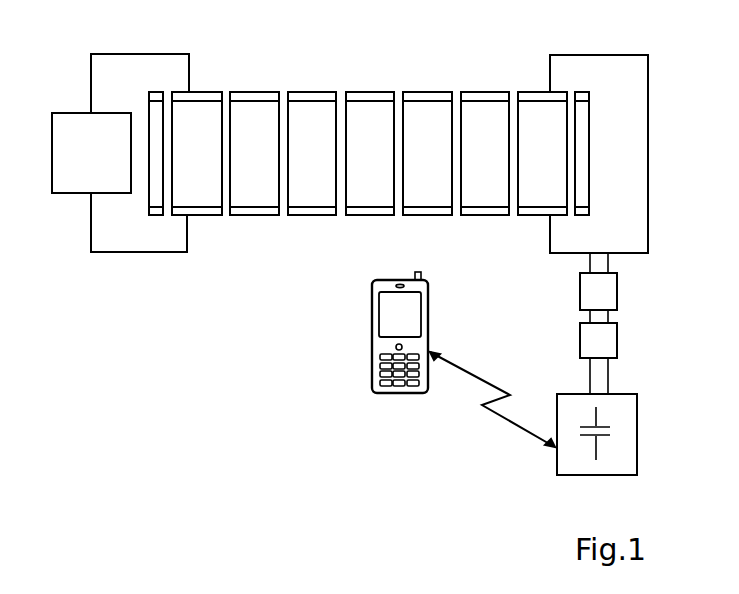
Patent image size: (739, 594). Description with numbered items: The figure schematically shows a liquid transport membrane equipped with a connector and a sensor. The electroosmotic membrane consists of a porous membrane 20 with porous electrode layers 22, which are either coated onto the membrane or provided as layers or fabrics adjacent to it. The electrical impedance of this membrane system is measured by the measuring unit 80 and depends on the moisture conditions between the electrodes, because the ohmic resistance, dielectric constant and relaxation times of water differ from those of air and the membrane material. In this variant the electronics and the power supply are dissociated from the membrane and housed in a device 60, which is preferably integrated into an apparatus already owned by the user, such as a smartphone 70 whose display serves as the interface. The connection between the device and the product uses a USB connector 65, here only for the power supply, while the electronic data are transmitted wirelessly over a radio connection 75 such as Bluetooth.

The porous membrane 20 is at (313, 123).
The porous electrode layers 22 is at (428, 97).
The device 60 is at (627, 411).
The USB connector 65 is at (607, 340).
The smartphone 70 is at (415, 394).
The radio connection 75 is at (503, 417).
The measuring unit 80 is at (67, 194).